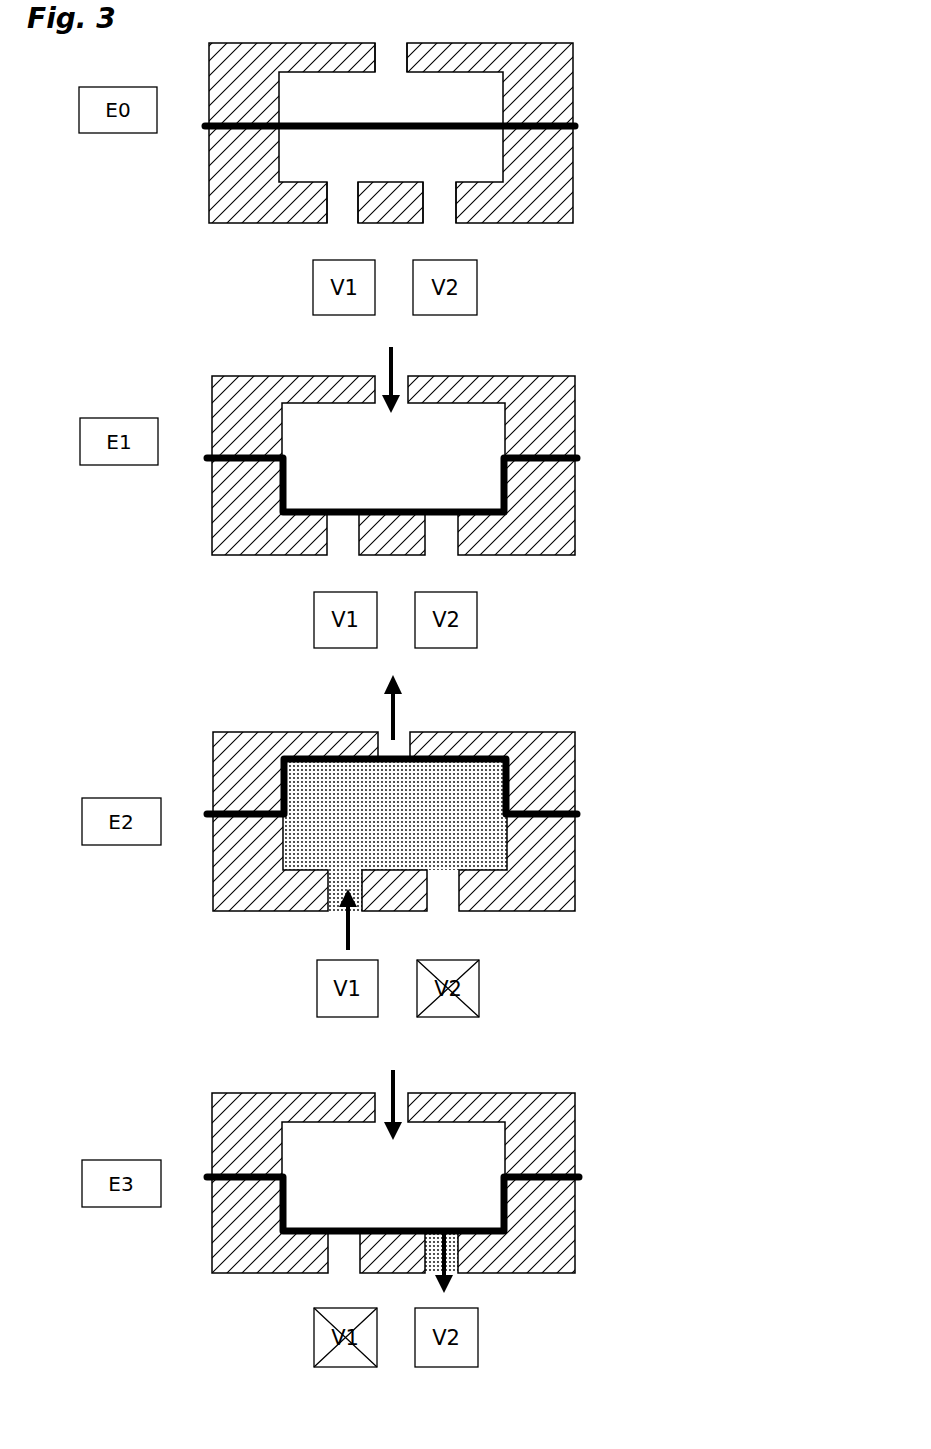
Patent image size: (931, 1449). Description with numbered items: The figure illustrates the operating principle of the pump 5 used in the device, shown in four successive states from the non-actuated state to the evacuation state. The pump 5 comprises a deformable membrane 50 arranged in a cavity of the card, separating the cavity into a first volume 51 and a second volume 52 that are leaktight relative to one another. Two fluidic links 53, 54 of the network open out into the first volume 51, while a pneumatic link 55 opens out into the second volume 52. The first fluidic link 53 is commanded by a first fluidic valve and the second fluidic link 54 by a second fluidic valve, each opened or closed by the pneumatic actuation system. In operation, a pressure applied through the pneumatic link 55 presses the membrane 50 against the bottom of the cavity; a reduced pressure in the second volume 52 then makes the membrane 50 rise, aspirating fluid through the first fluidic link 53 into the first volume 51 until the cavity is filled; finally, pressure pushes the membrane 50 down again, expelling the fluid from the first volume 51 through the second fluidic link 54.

The pump 5 is at (596, 35).
The deformable membrane 50 is at (575, 124).
The first volume 51 is at (483, 173).
The second volume 52 is at (483, 107).
The first fluidic link 53 is at (338, 202).
The second fluidic link 54 is at (437, 192).
The pneumatic link 55 is at (390, 58).